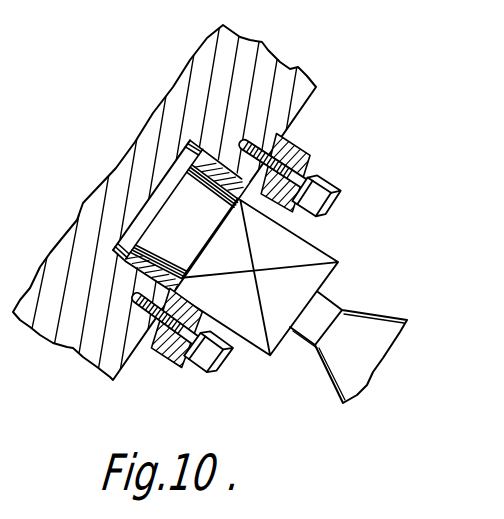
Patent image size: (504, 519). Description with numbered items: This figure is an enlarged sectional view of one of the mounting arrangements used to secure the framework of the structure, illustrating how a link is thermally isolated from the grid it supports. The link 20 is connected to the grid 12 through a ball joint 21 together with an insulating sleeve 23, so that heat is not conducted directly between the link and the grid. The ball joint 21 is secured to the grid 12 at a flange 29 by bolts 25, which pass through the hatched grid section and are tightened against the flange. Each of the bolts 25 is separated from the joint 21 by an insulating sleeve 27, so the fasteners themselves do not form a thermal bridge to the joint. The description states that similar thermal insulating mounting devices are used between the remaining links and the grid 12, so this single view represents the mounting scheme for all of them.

The grid 12 is at (303, 92).
The link 20 is at (407, 320).
The ball joint 21 is at (338, 262).
The insulating sleeve 23 is at (300, 136).
The bolts 25 is at (332, 195).
The insulating sleeves 27 is at (318, 161).
The flange 29 is at (203, 312).